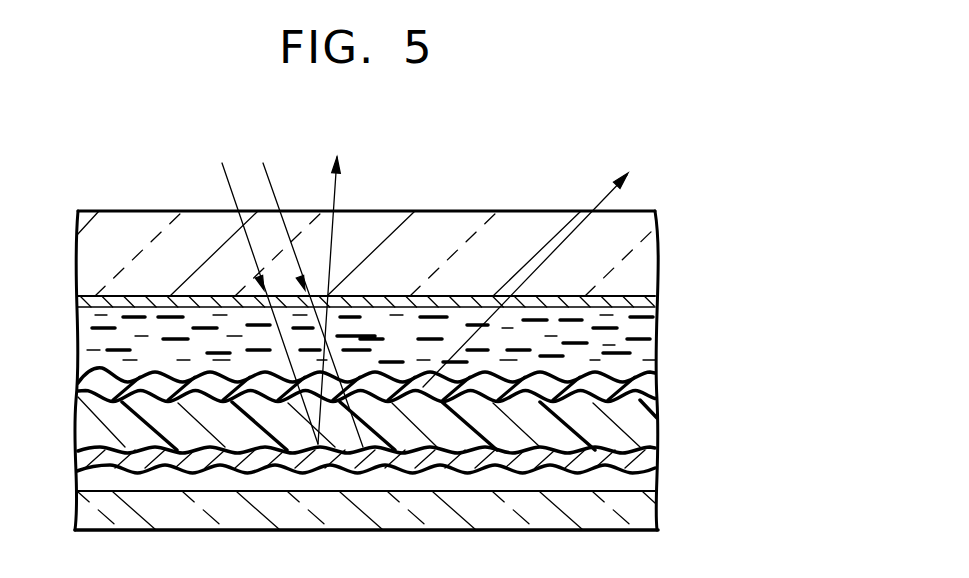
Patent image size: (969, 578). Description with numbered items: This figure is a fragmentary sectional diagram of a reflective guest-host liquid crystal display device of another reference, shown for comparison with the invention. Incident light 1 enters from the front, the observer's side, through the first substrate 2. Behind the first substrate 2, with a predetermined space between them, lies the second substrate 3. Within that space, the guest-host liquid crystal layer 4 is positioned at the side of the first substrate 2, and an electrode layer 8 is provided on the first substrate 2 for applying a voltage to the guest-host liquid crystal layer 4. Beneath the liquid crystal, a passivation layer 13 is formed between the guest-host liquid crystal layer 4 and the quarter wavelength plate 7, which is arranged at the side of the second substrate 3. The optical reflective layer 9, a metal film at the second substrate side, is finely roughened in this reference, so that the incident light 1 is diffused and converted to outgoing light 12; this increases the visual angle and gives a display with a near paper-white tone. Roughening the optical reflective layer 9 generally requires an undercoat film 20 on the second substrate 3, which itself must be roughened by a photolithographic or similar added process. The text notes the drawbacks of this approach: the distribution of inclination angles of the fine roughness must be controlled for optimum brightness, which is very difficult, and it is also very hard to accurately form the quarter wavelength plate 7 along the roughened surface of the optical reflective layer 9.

The incident light 1 is at (271, 181).
The outgoing light 12 is at (546, 216).
The first substrate 2 is at (640, 255).
The electrode layer 8 is at (640, 307).
The guest-host liquid crystal layer 4 is at (647, 355).
The passivation layer 13 is at (647, 392).
The quarter wavelength plate 7 is at (650, 416).
The optical reflective layer 9 is at (647, 463).
The undercoat film 20 is at (657, 488).
The second substrate 3 is at (657, 517).